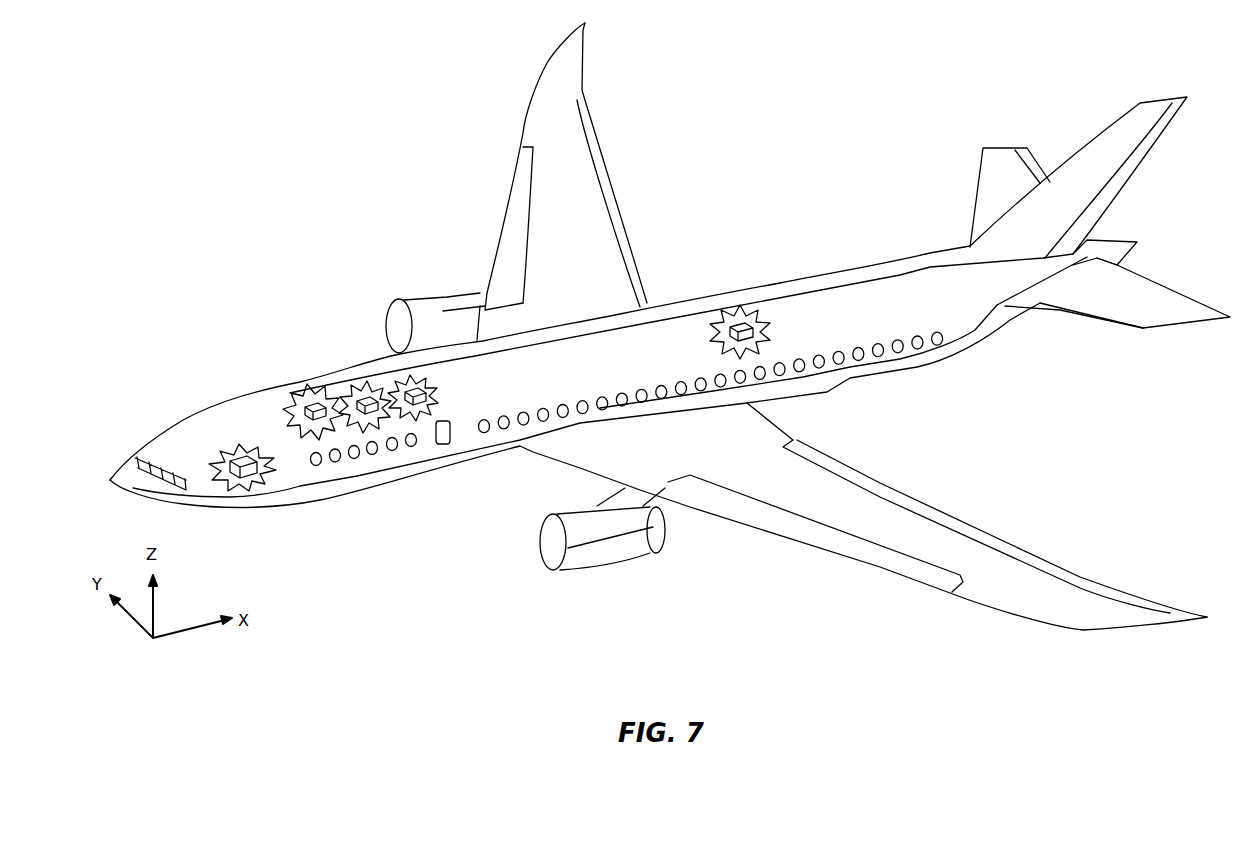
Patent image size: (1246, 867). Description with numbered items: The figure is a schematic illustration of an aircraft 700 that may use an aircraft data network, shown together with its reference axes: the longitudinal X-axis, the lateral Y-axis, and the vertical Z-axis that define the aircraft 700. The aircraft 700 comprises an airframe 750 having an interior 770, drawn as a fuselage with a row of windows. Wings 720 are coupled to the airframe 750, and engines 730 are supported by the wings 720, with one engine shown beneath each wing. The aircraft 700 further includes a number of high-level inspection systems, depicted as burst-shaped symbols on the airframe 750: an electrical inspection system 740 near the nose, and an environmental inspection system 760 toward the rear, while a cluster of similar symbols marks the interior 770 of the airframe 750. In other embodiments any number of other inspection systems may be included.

The aircraft 700 is at (385, 195).
The wings 720 is at (592, 207).
The engines 730 is at (420, 300).
The electrical inspection system 740 is at (248, 448).
The airframe 750 is at (357, 363).
The environmental inspection system 760 is at (740, 300).
The interior 770 is at (340, 415).